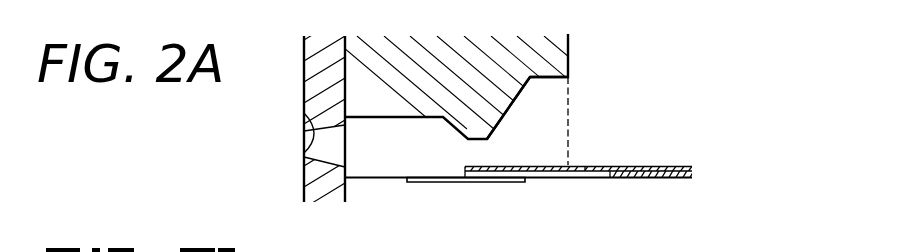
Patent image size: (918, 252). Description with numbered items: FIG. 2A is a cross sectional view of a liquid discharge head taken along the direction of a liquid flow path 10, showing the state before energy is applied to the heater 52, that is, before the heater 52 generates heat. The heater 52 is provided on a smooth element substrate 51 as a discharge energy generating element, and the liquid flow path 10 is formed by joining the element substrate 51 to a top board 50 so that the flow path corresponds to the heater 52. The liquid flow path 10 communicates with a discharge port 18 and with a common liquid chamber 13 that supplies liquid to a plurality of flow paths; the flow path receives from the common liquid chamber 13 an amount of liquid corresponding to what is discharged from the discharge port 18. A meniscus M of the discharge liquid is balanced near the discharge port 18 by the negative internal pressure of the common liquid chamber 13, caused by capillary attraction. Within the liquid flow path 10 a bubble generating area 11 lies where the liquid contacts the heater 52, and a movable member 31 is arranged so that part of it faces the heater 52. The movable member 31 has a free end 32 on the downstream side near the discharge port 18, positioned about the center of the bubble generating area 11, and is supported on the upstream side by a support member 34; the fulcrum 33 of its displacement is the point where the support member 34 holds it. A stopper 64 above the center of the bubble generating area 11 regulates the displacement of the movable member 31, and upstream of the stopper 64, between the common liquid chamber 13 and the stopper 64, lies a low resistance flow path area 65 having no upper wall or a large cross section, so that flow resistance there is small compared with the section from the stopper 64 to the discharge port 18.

The liquid flow path 10 is at (367, 126).
The bubble generating area 11 is at (488, 182).
The common liquid chamber 13 is at (601, 81).
The discharge port 18 is at (304, 147).
The movable member 31 is at (552, 166).
The free end 32 is at (467, 166).
The fulcrum 33 is at (587, 166).
The support member 34 is at (633, 178).
The top board 50 is at (404, 88).
The element substrate 51 is at (372, 213).
The heater 52 is at (423, 177).
The stopper 64 is at (476, 132).
The low resistance flow path area 65 is at (543, 98).
The meniscus M is at (304, 107).